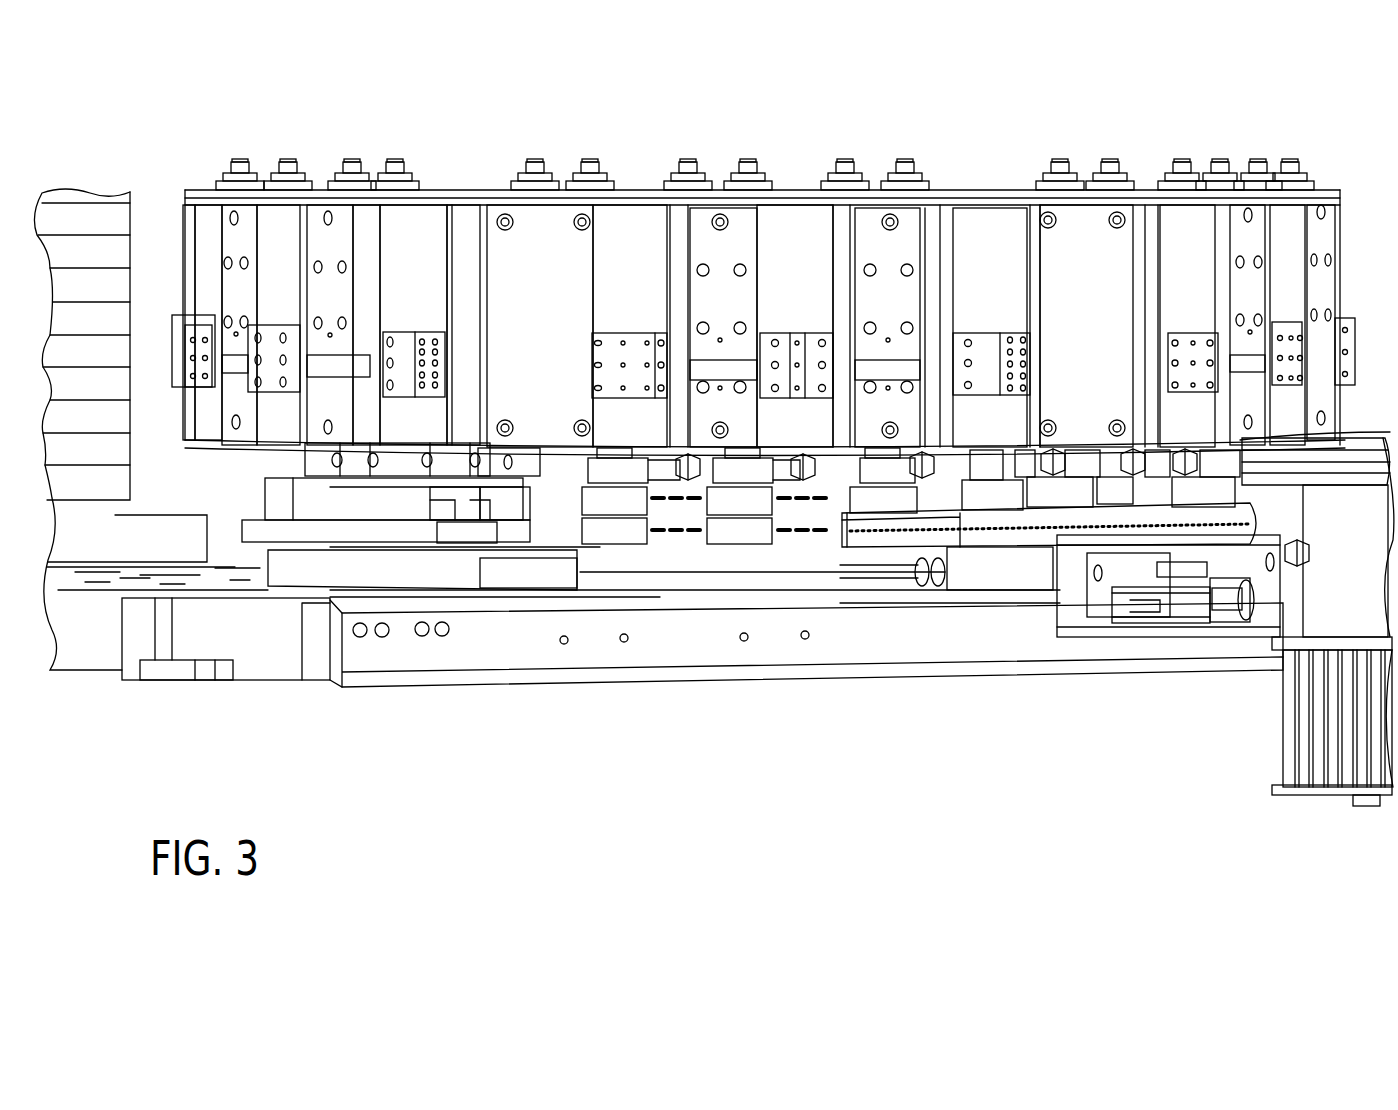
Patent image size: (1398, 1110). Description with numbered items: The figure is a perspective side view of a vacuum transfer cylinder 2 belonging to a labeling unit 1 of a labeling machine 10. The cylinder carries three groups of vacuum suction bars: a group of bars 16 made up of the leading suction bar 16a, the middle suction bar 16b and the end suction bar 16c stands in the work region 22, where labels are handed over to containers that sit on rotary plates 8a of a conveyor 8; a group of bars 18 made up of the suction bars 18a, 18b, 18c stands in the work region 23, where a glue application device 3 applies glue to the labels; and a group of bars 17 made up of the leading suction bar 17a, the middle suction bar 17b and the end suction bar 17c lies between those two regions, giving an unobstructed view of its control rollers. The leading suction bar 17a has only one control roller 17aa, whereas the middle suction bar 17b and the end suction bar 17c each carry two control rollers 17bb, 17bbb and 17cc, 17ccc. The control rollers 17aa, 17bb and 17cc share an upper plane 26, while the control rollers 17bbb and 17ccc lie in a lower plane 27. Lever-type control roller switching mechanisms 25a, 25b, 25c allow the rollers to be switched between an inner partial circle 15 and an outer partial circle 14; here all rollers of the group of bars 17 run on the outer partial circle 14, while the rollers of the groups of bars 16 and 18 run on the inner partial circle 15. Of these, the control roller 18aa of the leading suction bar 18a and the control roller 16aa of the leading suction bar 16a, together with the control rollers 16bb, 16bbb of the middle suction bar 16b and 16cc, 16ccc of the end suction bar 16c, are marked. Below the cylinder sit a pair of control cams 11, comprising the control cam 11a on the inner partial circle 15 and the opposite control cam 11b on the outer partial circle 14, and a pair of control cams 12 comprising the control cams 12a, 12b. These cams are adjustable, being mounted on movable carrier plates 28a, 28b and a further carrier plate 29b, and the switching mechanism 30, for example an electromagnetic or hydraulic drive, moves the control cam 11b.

The labeling unit 1 is at (702, 680).
The labeling machine 10 is at (375, 688).
The vacuum transfer cylinder 2 is at (500, 197).
The glue application device 3 is at (90, 215).
The conveyor 8 is at (1343, 575).
The rotary plates 8a is at (1365, 440).
The pair of control cams 11 is at (1060, 738).
The control cam 11a is at (950, 545).
The control cam 11b is at (1030, 545).
The pair of control cams 12 is at (540, 735).
The control cam 12a is at (565, 525).
The control cam 12b is at (465, 522).
The outer partial circle 14 is at (1070, 535).
The inner partial circle 15 is at (905, 535).
The group of bars 16 is at (1350, 100).
The leading suction bar 16a is at (1340, 222).
The middle suction bar 16b is at (1275, 222).
The end suction bar 16c is at (1162, 222).
The control roller 16aa is at (1112, 440).
The control roller 16bb is at (1080, 442).
The control roller 16bbb is at (1040, 443).
The control roller 16cc is at (980, 462).
The control roller 16ccc is at (1012, 443).
The group of bars 17 is at (985, 100).
The leading suction bar 17a is at (985, 222).
The middle suction bar 17b is at (795, 222).
The end suction bar 17c is at (645, 220).
The control roller 17aa is at (880, 512).
The control roller 17bb is at (740, 510).
The control roller 17bbb is at (757, 540).
The control roller 17cc is at (615, 510).
The control roller 17ccc is at (635, 540).
The group of bars 18 is at (428, 100).
The leading suction bar 18a is at (413, 223).
The vacuum suction bar 18b is at (300, 222).
The vacuum suction bar 18c is at (213, 210).
The control roller 18aa is at (540, 450).
The work region 22 is at (1140, 567).
The work region 23 is at (280, 567).
The control roller switching mechanism 25a is at (910, 442).
The control roller switching mechanism 25b is at (790, 465).
The control roller switching mechanism 25c is at (622, 465).
The plane 26 is at (653, 500).
The plane 27 is at (683, 530).
The carrier plate 28a is at (565, 522).
The carrier plate 28b is at (262, 522).
The knob 29b is at (1240, 560).
The switching mechanism 30 is at (1160, 605).